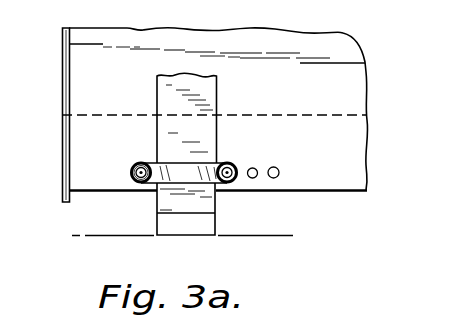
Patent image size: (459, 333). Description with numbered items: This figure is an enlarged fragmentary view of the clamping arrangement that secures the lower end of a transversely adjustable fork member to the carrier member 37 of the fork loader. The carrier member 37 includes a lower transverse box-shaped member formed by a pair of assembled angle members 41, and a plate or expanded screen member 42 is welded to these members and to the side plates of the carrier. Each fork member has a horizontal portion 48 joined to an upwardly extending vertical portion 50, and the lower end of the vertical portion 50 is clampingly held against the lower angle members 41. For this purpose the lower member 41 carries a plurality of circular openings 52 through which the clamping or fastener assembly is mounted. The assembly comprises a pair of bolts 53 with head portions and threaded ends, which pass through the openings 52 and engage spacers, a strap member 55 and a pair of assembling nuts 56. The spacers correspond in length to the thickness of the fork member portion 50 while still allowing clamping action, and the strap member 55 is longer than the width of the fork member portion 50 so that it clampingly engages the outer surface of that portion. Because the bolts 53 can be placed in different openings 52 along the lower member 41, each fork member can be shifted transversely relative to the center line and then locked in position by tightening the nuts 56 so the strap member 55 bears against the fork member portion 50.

The carrier member 37 is at (323, 73).
The lower angle members 41 is at (80, 117).
The plate or expanded screen member 42 is at (348, 169).
The horizontal portion 48 is at (165, 227).
The vertical portion 50 is at (217, 93).
The circular openings 52 is at (252, 178).
The bolts 53 is at (138, 185).
The strap member 55 is at (185, 172).
The assembling nuts 56 is at (131, 162).